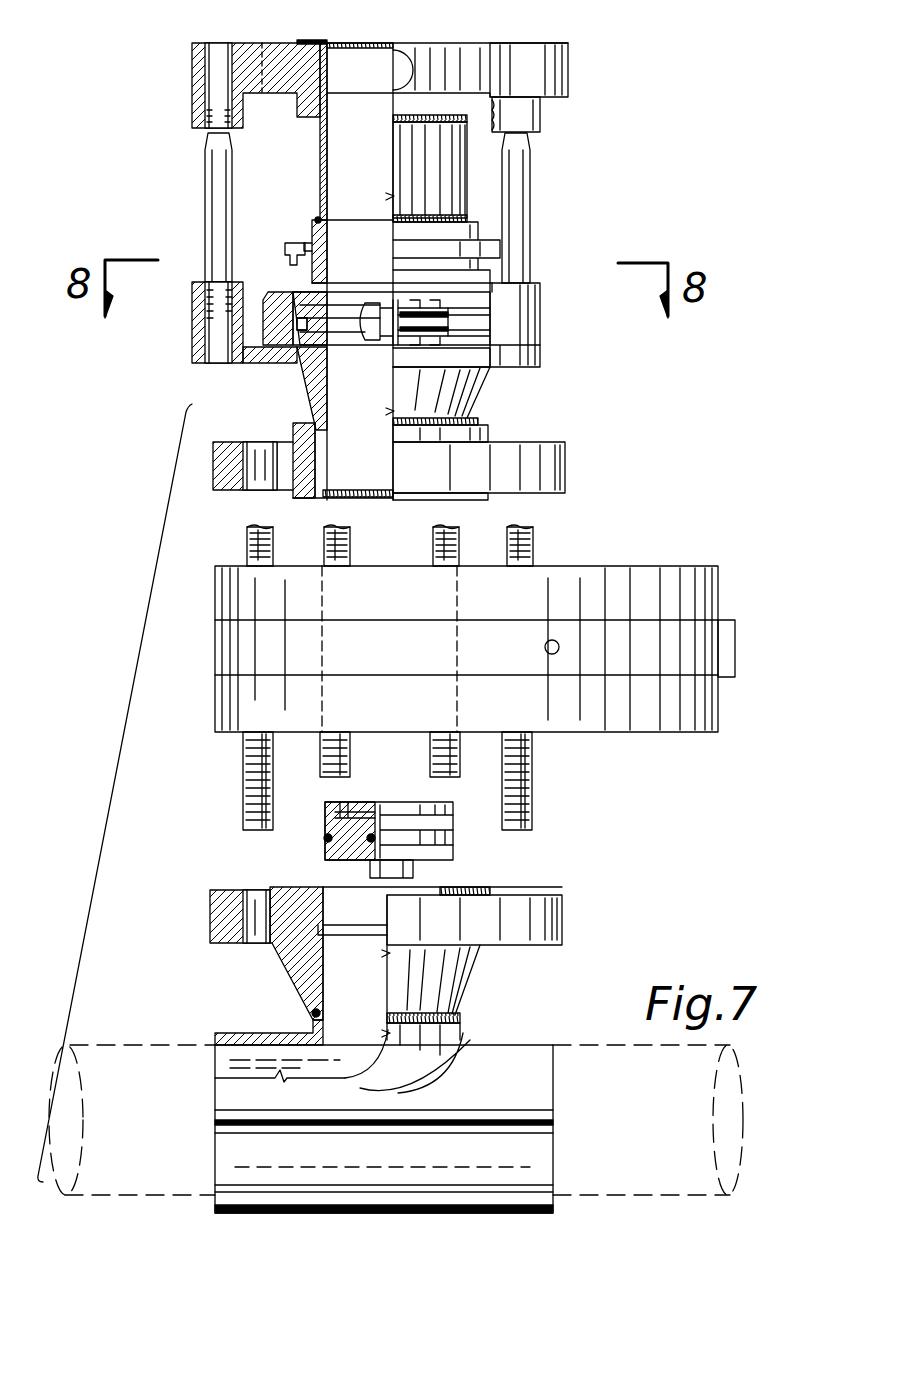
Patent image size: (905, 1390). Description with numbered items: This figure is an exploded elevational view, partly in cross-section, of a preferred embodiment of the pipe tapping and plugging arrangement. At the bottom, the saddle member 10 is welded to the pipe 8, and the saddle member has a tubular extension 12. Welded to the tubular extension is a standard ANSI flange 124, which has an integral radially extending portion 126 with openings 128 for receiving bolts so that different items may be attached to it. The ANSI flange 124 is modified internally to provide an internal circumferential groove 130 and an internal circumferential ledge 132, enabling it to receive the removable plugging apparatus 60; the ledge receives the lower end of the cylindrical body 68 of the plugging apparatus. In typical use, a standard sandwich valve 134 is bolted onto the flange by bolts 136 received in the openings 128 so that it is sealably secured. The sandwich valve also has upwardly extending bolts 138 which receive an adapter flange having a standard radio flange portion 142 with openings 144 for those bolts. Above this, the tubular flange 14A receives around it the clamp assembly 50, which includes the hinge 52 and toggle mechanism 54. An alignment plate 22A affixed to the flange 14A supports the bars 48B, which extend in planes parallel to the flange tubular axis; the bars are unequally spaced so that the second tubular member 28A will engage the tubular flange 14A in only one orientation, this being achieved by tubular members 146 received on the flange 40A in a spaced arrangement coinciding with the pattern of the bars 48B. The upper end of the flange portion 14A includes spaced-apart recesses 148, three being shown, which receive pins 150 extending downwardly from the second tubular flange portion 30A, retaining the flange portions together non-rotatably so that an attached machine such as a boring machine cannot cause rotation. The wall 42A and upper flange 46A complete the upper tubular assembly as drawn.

The pipe 8 is at (730, 1047).
The saddle member 10 is at (538, 1040).
The tubular extension 12 is at (445, 1036).
The tubular flange 14A is at (463, 385).
The alignment plate 22A is at (262, 358).
The second tubular member 28A is at (455, 178).
The second tubular flange portion 30A is at (318, 220).
The flange 40A is at (272, 63).
The wall 42A is at (288, 44).
The upper flange 46A is at (565, 60).
The bars 48B is at (212, 168).
The clamp assembly 50 is at (268, 282).
The hinge 52 is at (375, 348).
The toggle mechanism 54 is at (482, 318).
The removable plugging apparatus 60 is at (468, 832).
The cylindrical body 68 is at (338, 835).
The ANSI flange 124 is at (470, 962).
The radially extending portion 126 is at (225, 918).
The openings 128 is at (247, 892).
The internal circumferential groove 130 is at (318, 929).
The internal circumferential ledge 132 is at (325, 972).
The sandwich valve 134 is at (740, 562).
The bolts 136 is at (250, 760).
The upwardly extending bolts 138 is at (250, 545).
The standard radio flange portion 142 is at (548, 462).
The openings 144 is at (252, 480).
The tubular members 146 is at (525, 115).
The recesses 148 is at (305, 318).
The pins 150 is at (290, 250).